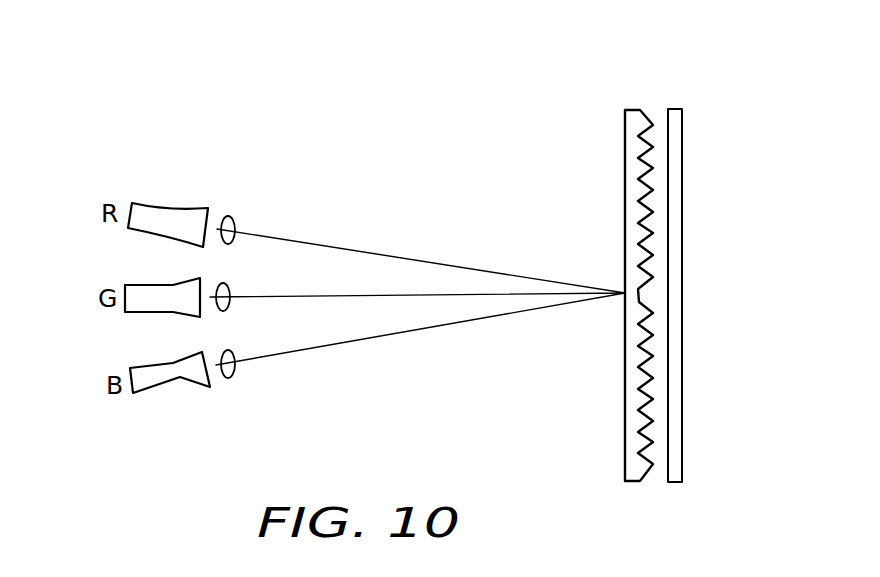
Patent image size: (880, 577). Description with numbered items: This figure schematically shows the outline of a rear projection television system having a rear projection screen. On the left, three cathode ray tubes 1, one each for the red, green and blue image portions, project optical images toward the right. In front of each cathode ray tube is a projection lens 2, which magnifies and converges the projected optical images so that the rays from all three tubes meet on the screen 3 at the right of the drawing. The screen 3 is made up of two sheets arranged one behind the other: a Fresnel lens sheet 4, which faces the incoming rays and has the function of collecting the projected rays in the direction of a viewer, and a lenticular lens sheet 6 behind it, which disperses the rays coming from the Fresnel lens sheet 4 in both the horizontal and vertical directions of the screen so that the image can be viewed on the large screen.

The cathode ray tube 1 is at (160, 208).
The projection lens 2 is at (231, 214).
The screen 3 is at (657, 241).
The Fresnel lens sheet 4 is at (637, 109).
The lenticular lens sheet 6 is at (695, 265).